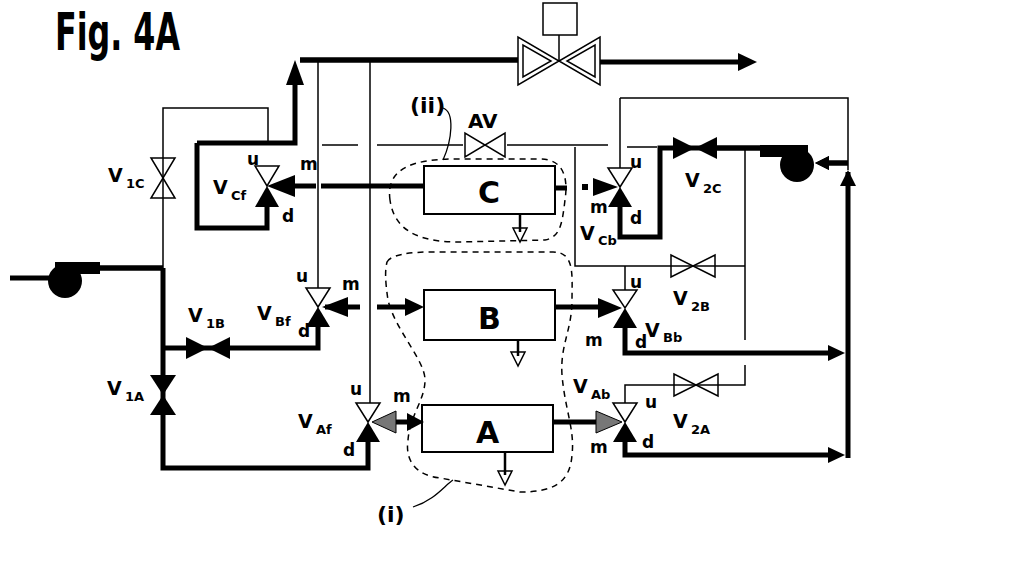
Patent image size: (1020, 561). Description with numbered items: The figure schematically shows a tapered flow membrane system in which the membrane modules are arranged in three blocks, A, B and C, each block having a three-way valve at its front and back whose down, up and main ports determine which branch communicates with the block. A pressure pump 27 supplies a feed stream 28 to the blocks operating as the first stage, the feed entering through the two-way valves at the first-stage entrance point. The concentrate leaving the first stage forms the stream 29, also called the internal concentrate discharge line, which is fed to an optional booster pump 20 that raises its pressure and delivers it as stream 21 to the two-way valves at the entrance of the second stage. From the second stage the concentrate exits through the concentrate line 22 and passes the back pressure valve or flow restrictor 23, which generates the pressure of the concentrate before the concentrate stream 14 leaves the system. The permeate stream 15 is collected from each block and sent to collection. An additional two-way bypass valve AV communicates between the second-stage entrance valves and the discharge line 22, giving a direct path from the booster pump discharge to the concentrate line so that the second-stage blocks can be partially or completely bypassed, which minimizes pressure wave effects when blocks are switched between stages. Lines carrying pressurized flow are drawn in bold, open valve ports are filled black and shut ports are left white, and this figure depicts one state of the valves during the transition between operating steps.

The concentrate stream 14 is at (680, 62).
The permeate stream 15 is at (528, 416).
The booster pump 20 is at (772, 178).
The stream 21 is at (755, 147).
The concentrate line 22 is at (458, 57).
The back pressure valve/flow restrictor 23 is at (518, 47).
The pressure pump 27 is at (22, 277).
The feed stream 28 is at (118, 268).
The internal concentrate discharge line 29 is at (838, 153).